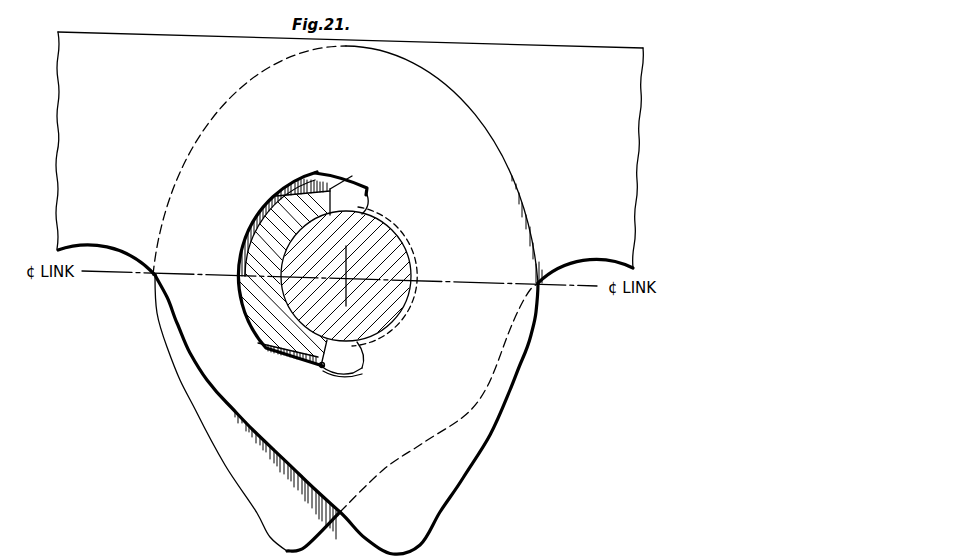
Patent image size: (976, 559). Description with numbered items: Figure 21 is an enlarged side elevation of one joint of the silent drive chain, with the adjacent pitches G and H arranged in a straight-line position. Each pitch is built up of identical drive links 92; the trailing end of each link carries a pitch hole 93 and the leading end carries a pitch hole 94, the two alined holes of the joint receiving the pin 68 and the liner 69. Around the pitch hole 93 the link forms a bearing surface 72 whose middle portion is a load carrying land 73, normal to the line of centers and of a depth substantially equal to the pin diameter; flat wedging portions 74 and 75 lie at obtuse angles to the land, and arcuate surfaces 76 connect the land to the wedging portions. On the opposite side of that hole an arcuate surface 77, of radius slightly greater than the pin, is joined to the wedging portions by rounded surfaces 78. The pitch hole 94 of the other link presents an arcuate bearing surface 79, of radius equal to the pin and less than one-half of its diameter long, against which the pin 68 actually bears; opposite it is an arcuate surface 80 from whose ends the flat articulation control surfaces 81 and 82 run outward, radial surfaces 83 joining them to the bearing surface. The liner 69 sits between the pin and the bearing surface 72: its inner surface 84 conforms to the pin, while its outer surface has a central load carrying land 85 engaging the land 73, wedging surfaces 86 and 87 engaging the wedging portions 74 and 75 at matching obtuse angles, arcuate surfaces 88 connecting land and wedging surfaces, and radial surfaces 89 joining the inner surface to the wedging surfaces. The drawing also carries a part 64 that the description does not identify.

The plate 64 is at (90, 47).
The drive link 92 is at (178, 55).
The pitch G is at (143, 33).
The pitch H is at (547, 44).
The pin 68 is at (399, 266).
The arcuate surface 77 is at (408, 308).
The arcuate surface 76 is at (262, 208).
The arcuate surface 88 is at (272, 201).
The wedging surface 86 is at (325, 183).
The articulation control surface 81 is at (307, 172).
The wedging portion 74 is at (298, 176).
The radial surface 89 is at (343, 181).
The rounded surface 78 is at (370, 191).
The radial surface 83 is at (370, 206).
The articulation control surface 82 is at (342, 379).
The wedging surface 87 is at (312, 372).
The wedging portion 75 is at (295, 371).
The arcuate surface 80 is at (248, 229).
The pitch hole 93 is at (248, 238).
The load carrying land 85 is at (250, 256).
The inner surface 84 is at (252, 265).
The bearing surface 72 is at (252, 283).
The liner 69 is at (262, 300).
The load carrying land 73 is at (252, 316).
The pitch hole 94 is at (247, 332).
The bearing surface 79 is at (388, 327).